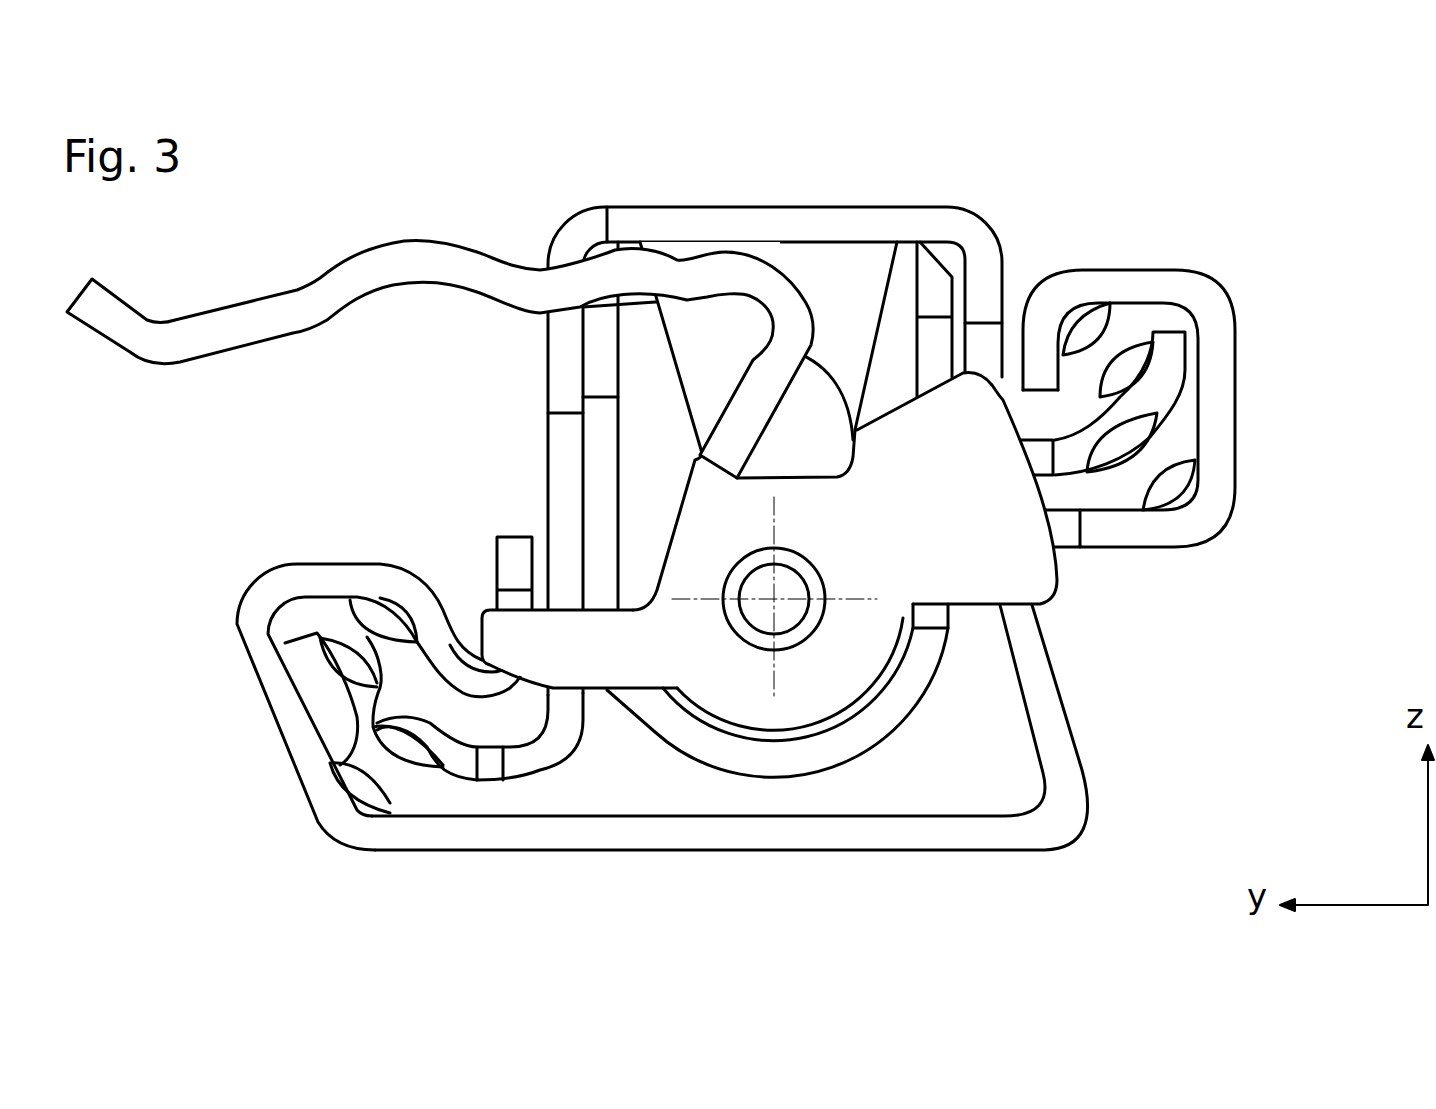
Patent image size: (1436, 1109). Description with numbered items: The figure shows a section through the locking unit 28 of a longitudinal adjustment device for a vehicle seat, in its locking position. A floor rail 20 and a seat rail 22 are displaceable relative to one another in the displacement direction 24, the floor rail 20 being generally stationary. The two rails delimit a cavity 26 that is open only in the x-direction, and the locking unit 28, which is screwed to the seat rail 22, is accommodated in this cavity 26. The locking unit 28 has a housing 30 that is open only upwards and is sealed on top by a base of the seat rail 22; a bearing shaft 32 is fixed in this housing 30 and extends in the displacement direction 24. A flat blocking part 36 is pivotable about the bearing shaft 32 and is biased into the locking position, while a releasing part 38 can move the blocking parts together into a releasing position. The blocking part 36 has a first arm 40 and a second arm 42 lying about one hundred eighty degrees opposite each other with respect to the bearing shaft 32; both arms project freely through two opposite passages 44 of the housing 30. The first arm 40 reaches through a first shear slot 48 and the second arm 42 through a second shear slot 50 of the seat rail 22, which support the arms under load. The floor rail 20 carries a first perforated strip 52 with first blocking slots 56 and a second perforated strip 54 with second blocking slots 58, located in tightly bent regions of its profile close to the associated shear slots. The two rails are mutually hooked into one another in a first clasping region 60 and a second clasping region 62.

The floor rail 20 is at (955, 838).
The seat rail 22 is at (813, 228).
The displacement direction 24 is at (775, 600).
The cavity 26 is at (603, 750).
The locking unit 28 is at (552, 429).
The housing 30 is at (873, 727).
The bearing shaft 32 is at (787, 640).
The blocking part 36 is at (843, 657).
The releasing part 38 is at (410, 258).
The first arm 40 is at (779, 545).
The second arm 42 is at (540, 650).
The passage 44 is at (595, 407).
The first shear slot 48 is at (1037, 460).
The second shear slot 50 is at (560, 528).
The first perforated strip 52 is at (1075, 550).
The second perforated strip 54 is at (420, 680).
The first blocking slot 56 is at (1017, 624).
The second blocking slot 58 is at (447, 650).
The first clasping region 60 is at (1179, 376).
The second clasping region 62 is at (270, 637).